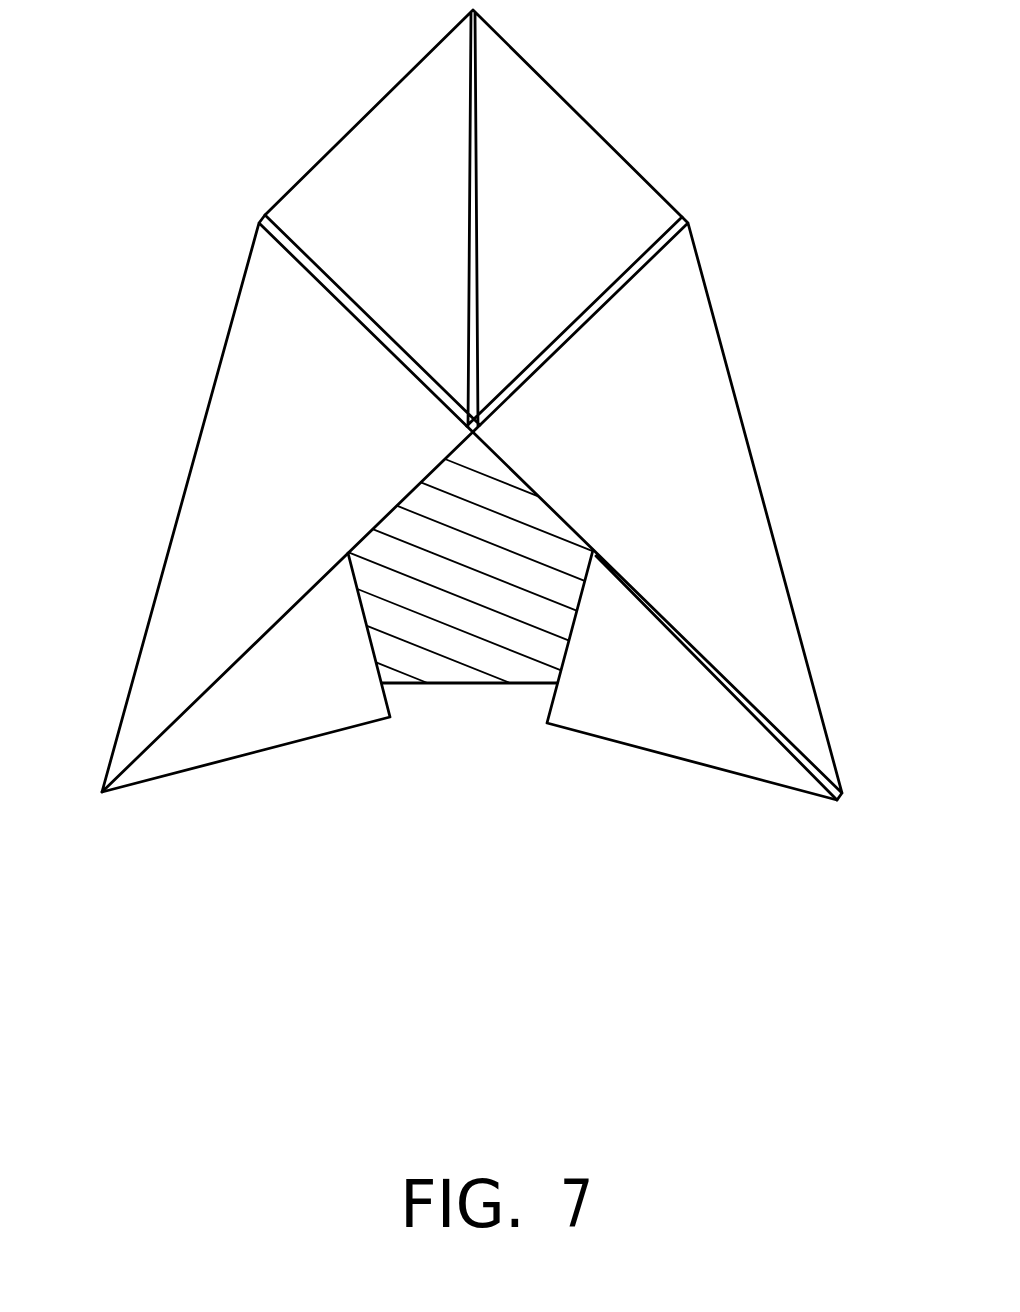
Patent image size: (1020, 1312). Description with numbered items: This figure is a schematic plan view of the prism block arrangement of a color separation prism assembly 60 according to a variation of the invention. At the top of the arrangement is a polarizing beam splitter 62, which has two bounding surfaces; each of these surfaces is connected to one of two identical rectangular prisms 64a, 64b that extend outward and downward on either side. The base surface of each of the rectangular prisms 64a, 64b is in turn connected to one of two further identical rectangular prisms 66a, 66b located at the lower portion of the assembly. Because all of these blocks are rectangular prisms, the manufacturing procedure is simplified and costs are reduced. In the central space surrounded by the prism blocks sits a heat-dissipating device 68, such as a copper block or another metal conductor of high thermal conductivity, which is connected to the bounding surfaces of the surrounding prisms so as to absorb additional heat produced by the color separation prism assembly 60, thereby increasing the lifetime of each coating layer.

The color separation prism assembly 60 is at (764, 171).
The polarizing beam splitter 62 is at (558, 127).
The rectangular prism 64a is at (213, 455).
The rectangular prism 64b is at (733, 457).
The rectangular prism 66a is at (280, 728).
The rectangular prism 66b is at (633, 733).
The heat-dissipating device 68 is at (455, 683).